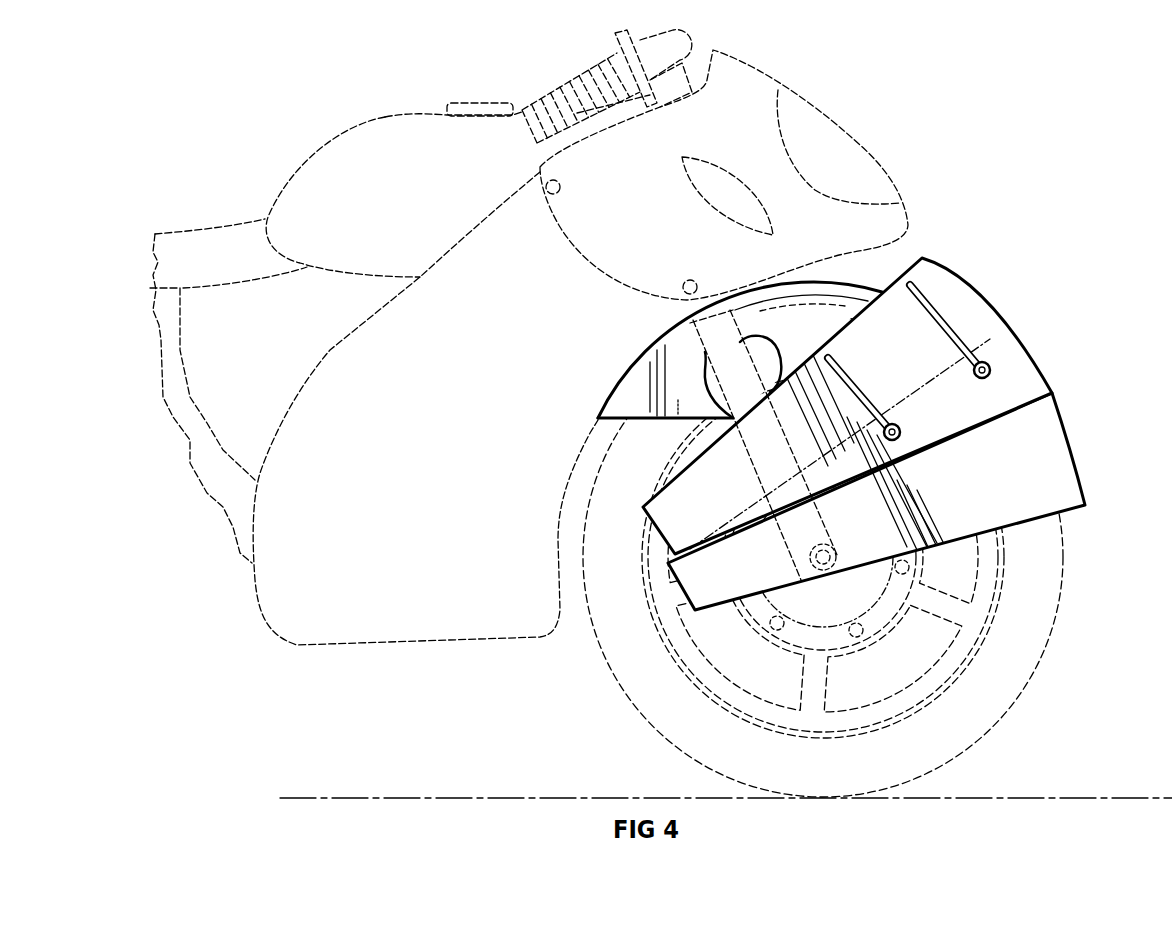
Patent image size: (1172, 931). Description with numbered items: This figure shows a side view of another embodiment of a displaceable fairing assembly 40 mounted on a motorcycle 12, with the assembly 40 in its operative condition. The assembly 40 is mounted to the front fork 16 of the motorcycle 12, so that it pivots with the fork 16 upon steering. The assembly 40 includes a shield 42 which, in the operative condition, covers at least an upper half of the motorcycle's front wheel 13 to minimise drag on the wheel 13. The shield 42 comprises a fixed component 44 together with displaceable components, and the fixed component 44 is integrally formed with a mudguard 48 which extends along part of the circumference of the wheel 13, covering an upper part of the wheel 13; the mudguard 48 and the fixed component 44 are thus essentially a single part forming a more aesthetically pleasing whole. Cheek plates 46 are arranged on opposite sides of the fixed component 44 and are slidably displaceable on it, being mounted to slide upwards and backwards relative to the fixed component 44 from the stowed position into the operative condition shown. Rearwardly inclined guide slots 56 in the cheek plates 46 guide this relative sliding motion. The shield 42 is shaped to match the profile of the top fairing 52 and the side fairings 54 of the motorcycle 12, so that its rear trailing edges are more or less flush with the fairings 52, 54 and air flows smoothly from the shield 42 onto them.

The motorcycle 12 is at (915, 195).
The front wheel 13 is at (663, 697).
The front fork 16 is at (740, 393).
The fairing assembly 40 is at (883, 404).
The shield 42 is at (906, 431).
The fixed component 44 is at (952, 503).
The cheek plates 46 is at (916, 376).
The mudguard 48 is at (833, 303).
The top fairing 52 is at (740, 93).
The side fairings 54 is at (380, 595).
The guide slots 56 is at (938, 307).